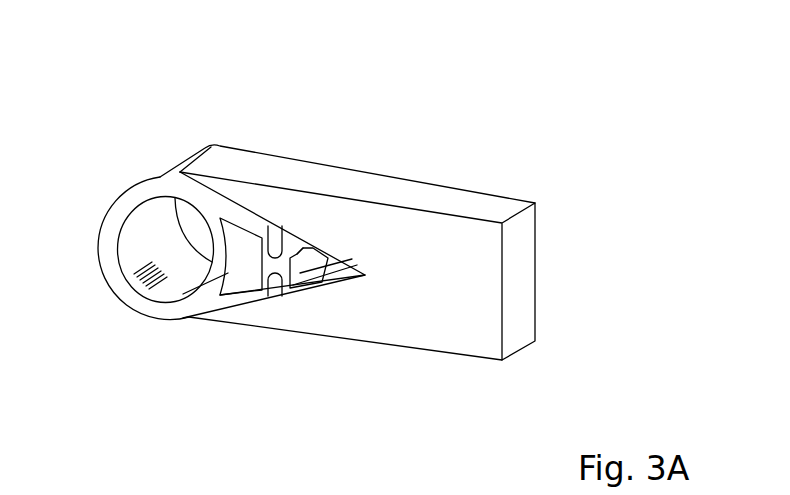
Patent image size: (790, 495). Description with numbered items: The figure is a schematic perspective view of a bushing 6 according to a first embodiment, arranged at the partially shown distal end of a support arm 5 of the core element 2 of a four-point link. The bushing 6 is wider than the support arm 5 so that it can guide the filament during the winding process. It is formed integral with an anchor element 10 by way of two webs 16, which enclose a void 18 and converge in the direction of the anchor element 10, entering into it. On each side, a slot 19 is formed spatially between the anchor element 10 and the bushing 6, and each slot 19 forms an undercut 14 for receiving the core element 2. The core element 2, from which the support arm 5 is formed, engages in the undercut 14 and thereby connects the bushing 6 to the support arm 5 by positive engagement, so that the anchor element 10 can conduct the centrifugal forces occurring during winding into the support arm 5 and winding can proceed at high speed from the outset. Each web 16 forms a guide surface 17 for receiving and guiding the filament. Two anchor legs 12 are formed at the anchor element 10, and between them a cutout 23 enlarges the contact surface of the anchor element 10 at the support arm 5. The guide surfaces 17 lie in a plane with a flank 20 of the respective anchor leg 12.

The core element 2 is at (437, 327).
The support arm 5 is at (429, 151).
The bushing 6 is at (117, 273).
The anchor element 10 is at (290, 300).
The anchor leg 12 is at (308, 242).
The undercut 14 is at (280, 230).
The web 16 is at (262, 232).
The guide surface 17 is at (222, 192).
The void 18 is at (170, 303).
The slot 19 is at (274, 235).
The flank 20 is at (312, 252).
The cutout 23 is at (300, 242).